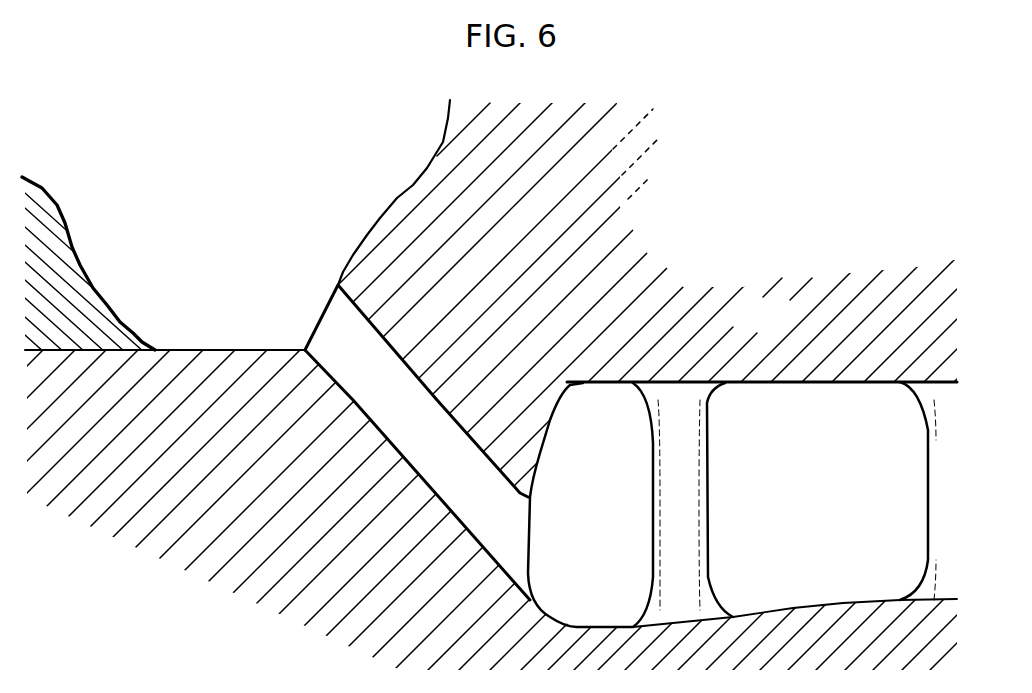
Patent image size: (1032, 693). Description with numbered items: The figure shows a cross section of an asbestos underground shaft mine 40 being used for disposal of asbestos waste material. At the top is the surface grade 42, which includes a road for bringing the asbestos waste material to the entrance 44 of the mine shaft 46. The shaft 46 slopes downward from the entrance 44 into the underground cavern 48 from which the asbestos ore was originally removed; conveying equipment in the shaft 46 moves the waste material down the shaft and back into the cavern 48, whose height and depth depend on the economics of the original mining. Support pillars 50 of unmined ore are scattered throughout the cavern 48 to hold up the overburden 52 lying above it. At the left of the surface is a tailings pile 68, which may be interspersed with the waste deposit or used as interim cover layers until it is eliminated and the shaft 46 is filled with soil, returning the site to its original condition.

The asbestos underground shaft mine 40 is at (247, 252).
The surface grade 42 is at (210, 350).
The entrance 44 is at (305, 350).
The mine shaft 46 is at (313, 304).
The underground cavern 48 is at (607, 436).
The support pillars 50 is at (700, 467).
The overburden 52 is at (777, 326).
The tailings pile 68 is at (63, 253).